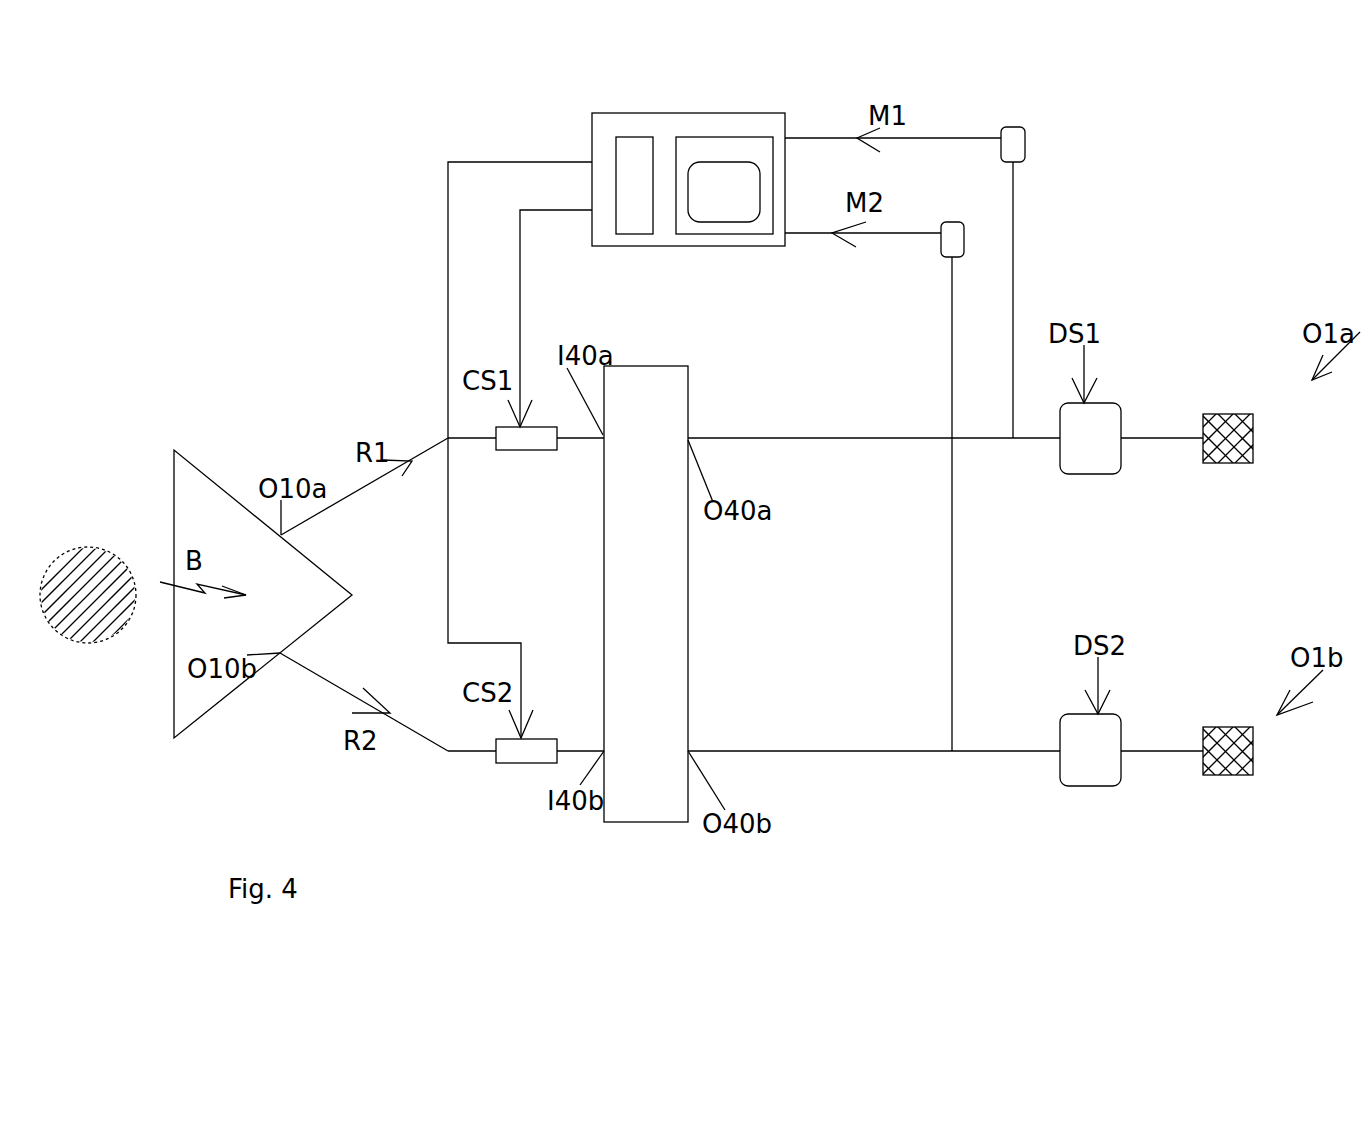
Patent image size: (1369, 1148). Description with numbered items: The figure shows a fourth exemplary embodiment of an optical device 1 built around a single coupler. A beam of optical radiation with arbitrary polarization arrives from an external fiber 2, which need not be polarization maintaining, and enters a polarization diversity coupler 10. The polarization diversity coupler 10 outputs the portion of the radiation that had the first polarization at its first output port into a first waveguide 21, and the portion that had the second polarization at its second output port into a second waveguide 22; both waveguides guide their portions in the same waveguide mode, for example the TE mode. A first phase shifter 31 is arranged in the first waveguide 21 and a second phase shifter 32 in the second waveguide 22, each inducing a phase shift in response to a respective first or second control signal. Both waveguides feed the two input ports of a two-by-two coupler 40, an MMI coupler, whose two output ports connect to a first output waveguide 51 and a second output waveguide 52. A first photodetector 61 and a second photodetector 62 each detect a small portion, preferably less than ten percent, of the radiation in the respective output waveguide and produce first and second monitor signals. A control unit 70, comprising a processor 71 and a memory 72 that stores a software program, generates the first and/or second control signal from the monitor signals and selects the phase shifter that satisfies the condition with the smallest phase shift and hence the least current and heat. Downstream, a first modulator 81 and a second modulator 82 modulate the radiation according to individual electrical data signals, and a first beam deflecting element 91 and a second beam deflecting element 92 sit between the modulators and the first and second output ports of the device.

The optical device 1 is at (413, 318).
The external fiber 2 is at (89, 570).
The polarization diversity coupler 10 is at (232, 497).
The first waveguide 21 is at (342, 498).
The second waveguide 22 is at (328, 680).
The first phase shifter 31 is at (533, 438).
The second phase shifter 32 is at (520, 763).
The 2×2 coupler 40 is at (628, 583).
The first output waveguide 51 is at (808, 438).
The second output waveguide 52 is at (820, 751).
The first photodetector 61 is at (1012, 150).
The second photodetector 62 is at (953, 245).
The control unit 70 is at (592, 138).
The processor 71 is at (629, 222).
The memory 72 is at (711, 234).
The first modulator 81 is at (1090, 438).
The second modulator 82 is at (1090, 750).
The first beam deflecting element 91 is at (1228, 438).
The second beam deflecting element 92 is at (1238, 748).